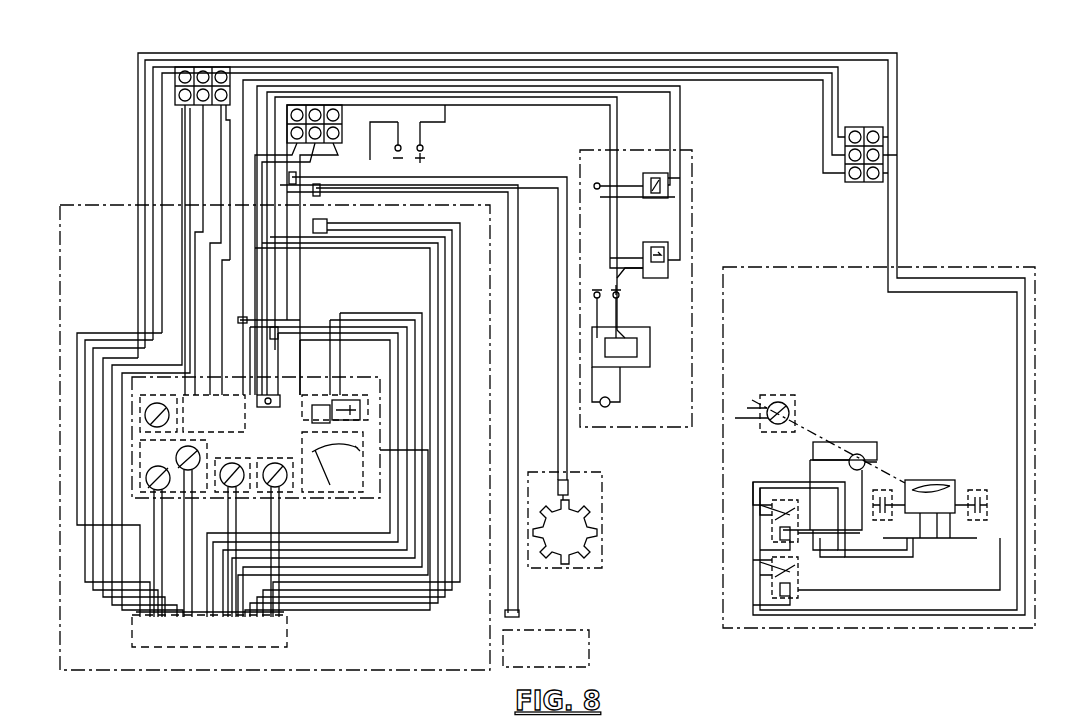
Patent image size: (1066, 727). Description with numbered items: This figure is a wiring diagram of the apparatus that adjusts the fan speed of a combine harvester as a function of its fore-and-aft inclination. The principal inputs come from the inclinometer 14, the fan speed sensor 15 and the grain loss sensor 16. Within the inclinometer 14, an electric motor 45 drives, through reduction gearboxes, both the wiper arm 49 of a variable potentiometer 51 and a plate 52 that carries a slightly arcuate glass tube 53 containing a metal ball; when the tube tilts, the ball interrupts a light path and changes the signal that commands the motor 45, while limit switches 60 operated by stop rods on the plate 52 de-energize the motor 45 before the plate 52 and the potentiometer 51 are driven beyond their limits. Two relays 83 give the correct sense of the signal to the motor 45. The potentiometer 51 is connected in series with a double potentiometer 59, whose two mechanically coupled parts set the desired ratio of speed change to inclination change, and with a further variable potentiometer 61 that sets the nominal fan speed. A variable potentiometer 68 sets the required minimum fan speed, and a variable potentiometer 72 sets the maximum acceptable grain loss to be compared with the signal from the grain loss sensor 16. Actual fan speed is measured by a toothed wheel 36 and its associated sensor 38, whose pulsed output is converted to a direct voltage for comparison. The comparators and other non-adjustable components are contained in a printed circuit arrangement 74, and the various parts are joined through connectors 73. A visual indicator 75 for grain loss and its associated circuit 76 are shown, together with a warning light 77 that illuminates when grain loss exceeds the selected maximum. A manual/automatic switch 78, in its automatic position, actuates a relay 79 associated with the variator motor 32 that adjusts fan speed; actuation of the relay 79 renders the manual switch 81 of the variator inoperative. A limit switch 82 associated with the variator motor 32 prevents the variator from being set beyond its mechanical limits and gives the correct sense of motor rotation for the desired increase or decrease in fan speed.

The inclinometer 14 is at (890, 430).
The fan speed sensor 15 is at (608, 563).
The grain loss sensor 16 is at (546, 638).
The variator motor 32 is at (610, 405).
The toothed wheel 36 is at (586, 513).
The sensor 38 is at (568, 485).
The electric motor 45 is at (862, 452).
The wiper arm 49 is at (775, 403).
The variable potentiometer 51 is at (792, 413).
The plate 52 is at (953, 495).
The glass tube 53 is at (928, 487).
The double potentiometer 59 is at (180, 456).
The limit switches 60 is at (975, 520).
The variable potentiometer 61 is at (145, 418).
The variable potentiometer 68 is at (236, 464).
The variable potentiometer 72 is at (275, 465).
The connectors 73 is at (305, 112).
The printed circuit arrangement 74 is at (209, 629).
The visual indicator 75 is at (332, 462).
The circuit 76 is at (214, 413).
The warning light 77 is at (278, 410).
The manual/automatic switch 78 is at (345, 400).
The relay 79 is at (660, 175).
The manual switch 81 is at (668, 250).
The limit switch 82 is at (630, 352).
The relays 83 is at (795, 566).